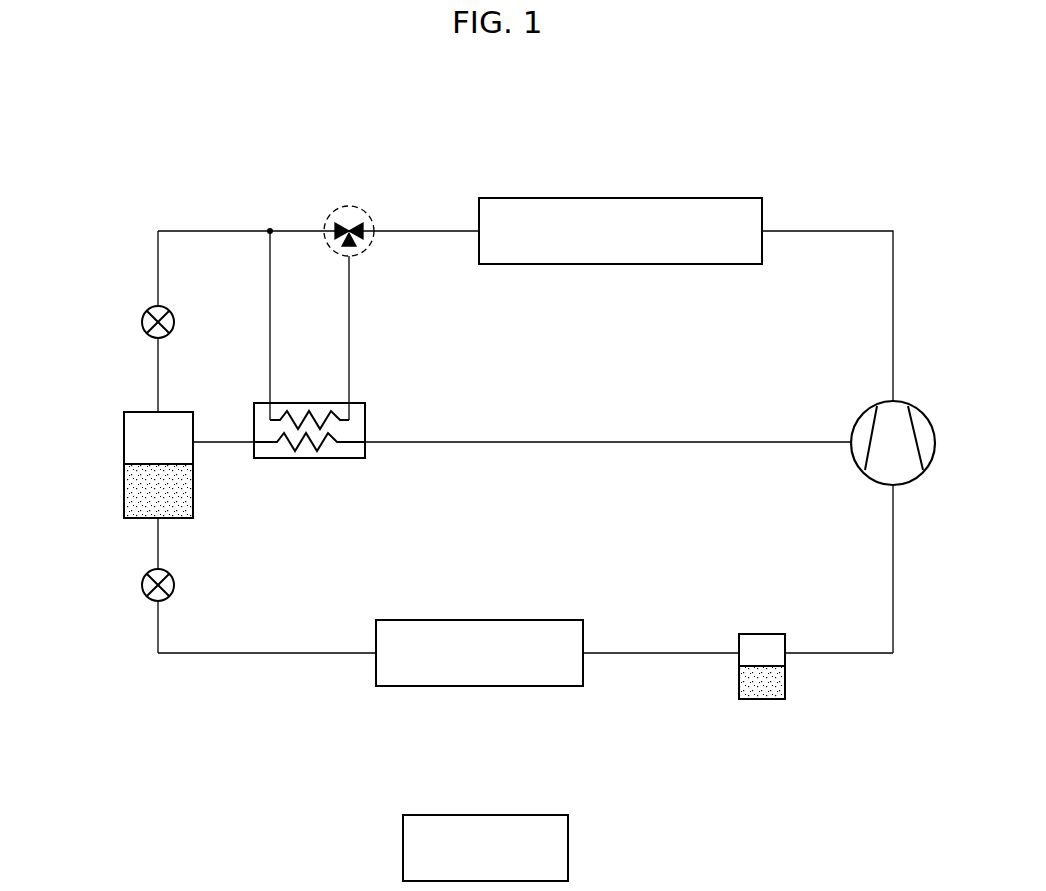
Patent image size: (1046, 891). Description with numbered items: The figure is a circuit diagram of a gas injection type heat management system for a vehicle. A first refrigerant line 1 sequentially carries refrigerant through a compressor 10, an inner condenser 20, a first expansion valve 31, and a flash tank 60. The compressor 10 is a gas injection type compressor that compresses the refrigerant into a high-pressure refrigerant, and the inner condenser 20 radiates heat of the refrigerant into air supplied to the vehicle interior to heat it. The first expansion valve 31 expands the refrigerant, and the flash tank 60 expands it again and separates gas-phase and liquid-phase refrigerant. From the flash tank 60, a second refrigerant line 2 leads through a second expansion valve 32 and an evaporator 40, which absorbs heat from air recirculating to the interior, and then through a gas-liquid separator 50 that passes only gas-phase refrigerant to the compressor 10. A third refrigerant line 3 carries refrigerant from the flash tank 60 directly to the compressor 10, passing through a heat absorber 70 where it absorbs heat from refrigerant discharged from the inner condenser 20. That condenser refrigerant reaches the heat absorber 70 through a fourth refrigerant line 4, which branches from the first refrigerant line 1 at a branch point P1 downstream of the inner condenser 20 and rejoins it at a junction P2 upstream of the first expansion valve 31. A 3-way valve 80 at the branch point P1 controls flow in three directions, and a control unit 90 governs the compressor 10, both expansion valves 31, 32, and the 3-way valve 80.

The first refrigerant line 1 is at (836, 231).
The second refrigerant line 2 is at (283, 655).
The third refrigerant line 3 is at (710, 442).
The fourth refrigerant line 4 is at (270, 289).
The compressor 10 is at (905, 405).
The inner condenser 20 is at (620, 198).
The first expansion valve 31 is at (148, 310).
The second expansion valve 32 is at (141, 583).
The evaporator 40 is at (480, 687).
The gas-liquid separator 50 is at (786, 685).
The flash tank 60 is at (124, 415).
The heat absorber 70 is at (363, 403).
The 3-way valve 80 is at (353, 225).
The control unit 90 is at (505, 863).
The branch point P1 is at (372, 216).
The junction P2 is at (271, 229).